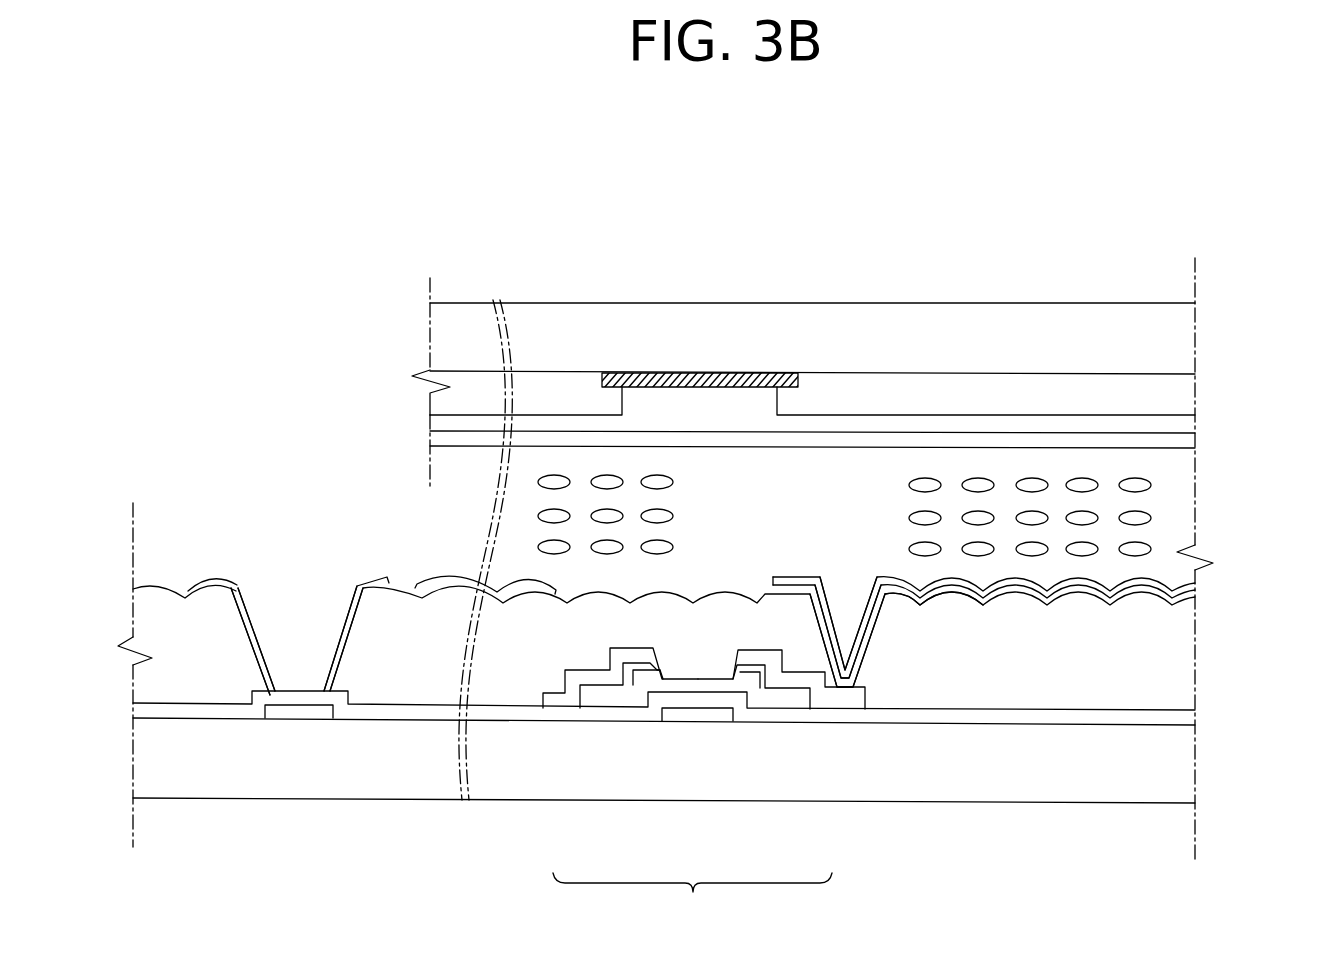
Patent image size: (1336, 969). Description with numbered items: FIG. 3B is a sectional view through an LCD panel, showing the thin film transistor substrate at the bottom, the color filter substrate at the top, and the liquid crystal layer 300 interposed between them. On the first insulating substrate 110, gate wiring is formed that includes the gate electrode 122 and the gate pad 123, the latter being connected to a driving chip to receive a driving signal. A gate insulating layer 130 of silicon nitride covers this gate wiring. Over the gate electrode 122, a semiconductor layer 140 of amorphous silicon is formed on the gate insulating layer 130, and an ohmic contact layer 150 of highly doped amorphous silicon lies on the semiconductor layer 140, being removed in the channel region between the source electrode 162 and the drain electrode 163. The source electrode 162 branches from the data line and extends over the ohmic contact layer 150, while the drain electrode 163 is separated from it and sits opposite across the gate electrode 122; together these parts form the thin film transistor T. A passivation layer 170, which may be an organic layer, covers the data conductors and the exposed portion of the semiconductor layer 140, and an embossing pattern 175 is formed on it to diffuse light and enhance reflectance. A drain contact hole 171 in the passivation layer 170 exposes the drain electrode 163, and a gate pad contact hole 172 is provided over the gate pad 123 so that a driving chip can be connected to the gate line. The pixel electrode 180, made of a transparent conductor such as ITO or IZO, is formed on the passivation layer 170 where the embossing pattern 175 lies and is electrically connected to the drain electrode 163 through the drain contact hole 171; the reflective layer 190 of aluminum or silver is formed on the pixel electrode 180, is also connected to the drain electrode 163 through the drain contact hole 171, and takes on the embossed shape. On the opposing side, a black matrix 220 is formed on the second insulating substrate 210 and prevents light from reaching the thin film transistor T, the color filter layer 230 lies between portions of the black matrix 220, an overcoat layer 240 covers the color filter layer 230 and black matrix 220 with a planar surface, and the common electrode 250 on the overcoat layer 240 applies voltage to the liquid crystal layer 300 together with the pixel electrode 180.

The first insulating substrate 110 is at (1195, 766).
The gate electrode 122 is at (693, 722).
The gate pad 123 is at (297, 718).
The gate insulating layer 130 is at (1195, 716).
The semiconductor layer 140 is at (773, 705).
The ohmic contact layer 150 is at (608, 693).
The source electrode 162 is at (550, 700).
The drain electrode 163 is at (837, 705).
The passivation layer 170 is at (1195, 657).
The drain contact hole 171 is at (847, 623).
The gate pad contact hole 172 is at (302, 673).
The embossing pattern 175 is at (1030, 600).
The pixel electrode 180 is at (940, 600).
The reflective layer 190 is at (980, 600).
The second insulating substrate 210 is at (1195, 350).
The black matrix 220 is at (702, 372).
The color filter layer 230 is at (1195, 392).
The overcoat layer 240 is at (1195, 424).
The common electrode 250 is at (1195, 455).
The liquid crystal layer 300 is at (1195, 502).
The thin film transistor T is at (692, 898).